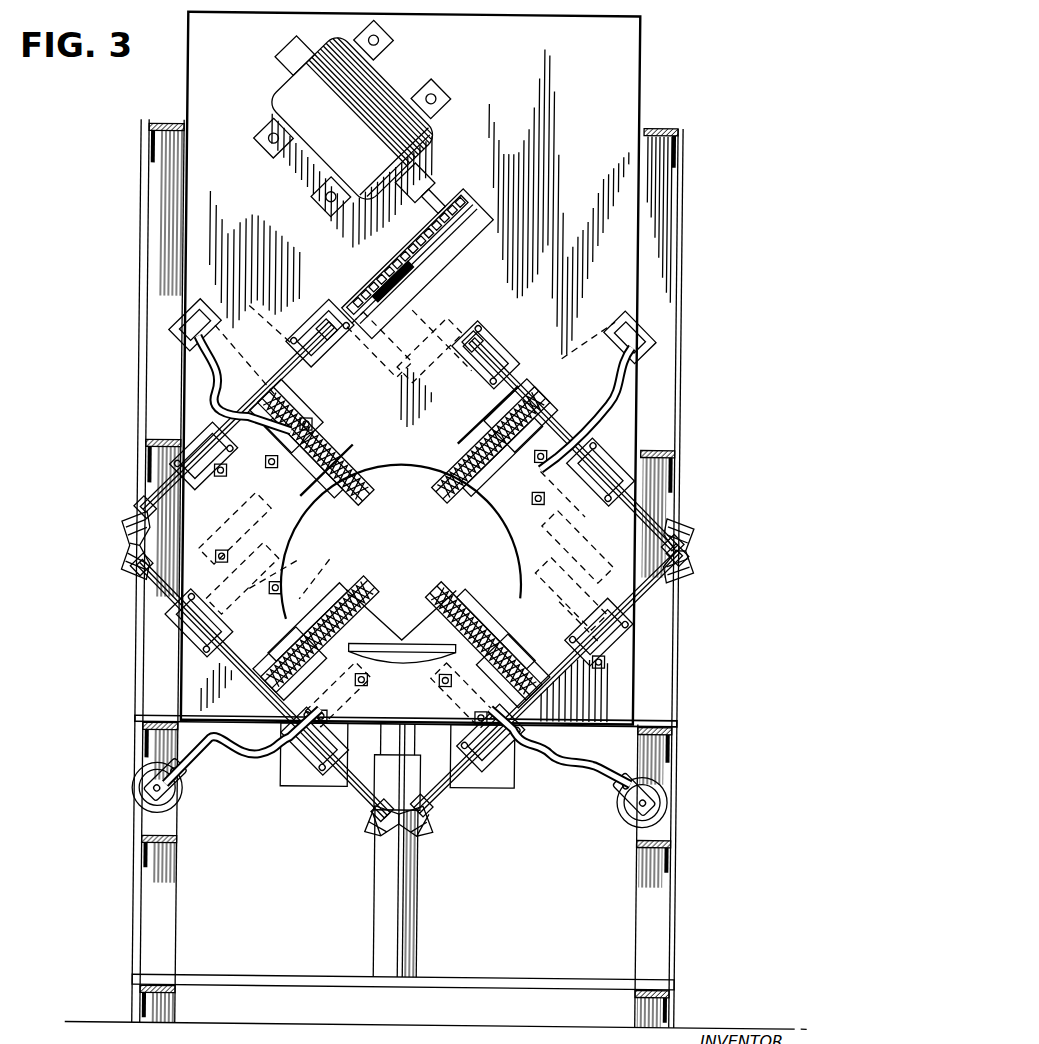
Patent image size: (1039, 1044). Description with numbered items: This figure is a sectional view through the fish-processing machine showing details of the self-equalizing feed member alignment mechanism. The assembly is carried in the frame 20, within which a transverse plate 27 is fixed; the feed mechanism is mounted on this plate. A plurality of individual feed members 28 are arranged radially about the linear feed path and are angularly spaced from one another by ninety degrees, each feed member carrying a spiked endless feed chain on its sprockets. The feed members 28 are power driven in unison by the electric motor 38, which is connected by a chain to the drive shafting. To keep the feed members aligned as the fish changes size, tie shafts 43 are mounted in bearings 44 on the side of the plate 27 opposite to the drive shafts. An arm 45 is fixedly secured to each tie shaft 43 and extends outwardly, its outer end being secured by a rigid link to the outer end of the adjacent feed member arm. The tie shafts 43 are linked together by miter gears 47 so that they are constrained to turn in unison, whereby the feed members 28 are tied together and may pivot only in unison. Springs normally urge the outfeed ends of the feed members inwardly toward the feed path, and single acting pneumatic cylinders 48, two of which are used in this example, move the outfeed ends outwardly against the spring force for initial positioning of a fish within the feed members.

The frame 20 is at (670, 726).
The transverse plate 27 is at (622, 76).
The feed member 28 is at (497, 514).
The electric motor 38 is at (306, 150).
The tie shaft 43 is at (284, 374).
The bearing 44 is at (316, 322).
The arm 45 is at (612, 384).
The miter gear 47 is at (688, 548).
The pneumatic cylinder 48 is at (137, 790).